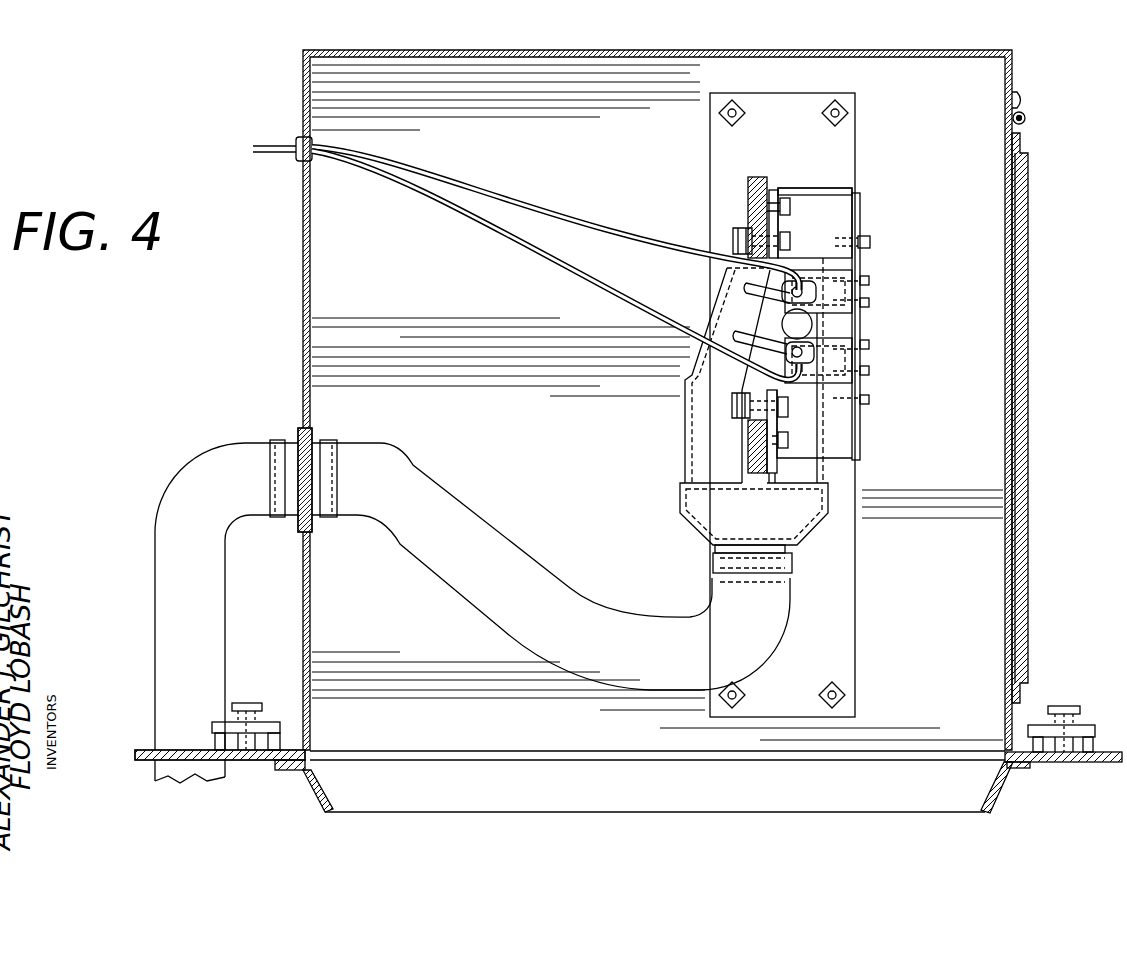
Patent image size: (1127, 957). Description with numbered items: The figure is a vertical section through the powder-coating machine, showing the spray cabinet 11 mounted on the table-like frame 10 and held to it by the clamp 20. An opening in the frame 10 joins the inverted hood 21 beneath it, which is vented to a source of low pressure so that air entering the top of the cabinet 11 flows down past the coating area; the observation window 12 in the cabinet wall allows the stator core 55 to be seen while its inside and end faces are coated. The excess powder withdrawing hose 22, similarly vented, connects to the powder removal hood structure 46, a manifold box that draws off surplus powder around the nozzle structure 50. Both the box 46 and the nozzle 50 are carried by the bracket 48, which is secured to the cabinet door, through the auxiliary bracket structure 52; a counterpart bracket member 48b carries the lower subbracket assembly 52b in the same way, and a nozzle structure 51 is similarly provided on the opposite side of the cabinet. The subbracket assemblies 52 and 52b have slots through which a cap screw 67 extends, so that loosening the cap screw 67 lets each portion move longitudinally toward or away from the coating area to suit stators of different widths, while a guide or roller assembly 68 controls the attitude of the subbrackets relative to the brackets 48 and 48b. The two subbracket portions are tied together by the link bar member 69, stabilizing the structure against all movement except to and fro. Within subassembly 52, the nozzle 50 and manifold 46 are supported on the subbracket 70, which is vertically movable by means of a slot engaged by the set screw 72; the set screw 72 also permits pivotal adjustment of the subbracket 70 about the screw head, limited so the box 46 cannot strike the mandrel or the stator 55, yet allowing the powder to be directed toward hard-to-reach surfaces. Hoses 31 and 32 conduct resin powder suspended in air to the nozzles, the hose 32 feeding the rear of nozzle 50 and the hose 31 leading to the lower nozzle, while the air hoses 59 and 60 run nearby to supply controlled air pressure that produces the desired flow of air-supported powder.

The table-like frame 10 is at (150, 749).
The spray cabinet 11 is at (880, 49).
The observation window 12 is at (1022, 344).
The clamp 20 is at (1075, 725).
The inverted hood 21 is at (505, 822).
The excess powder withdrawing hose 22 is at (585, 607).
The hose 31 is at (737, 340).
The hose or conduit 32 is at (750, 293).
The powder removal hood structure 46 is at (690, 404).
The bracket 48 is at (755, 177).
The counterpart bracket member 48b is at (757, 473).
The nozzle structure 50 is at (805, 283).
The nozzle structure 51 is at (804, 378).
The auxiliary bracket structure 52 is at (815, 190).
The subbracket assembly 52b is at (770, 462).
The stator core 55 is at (840, 325).
The air hose 59 is at (605, 287).
The air hose 60 is at (602, 233).
The cap screw 67 is at (792, 209).
The guide or roller assembly 68 is at (755, 238).
The link bar member 69 is at (838, 190).
The subbracket 70 is at (861, 206).
The set screw 72 is at (872, 243).